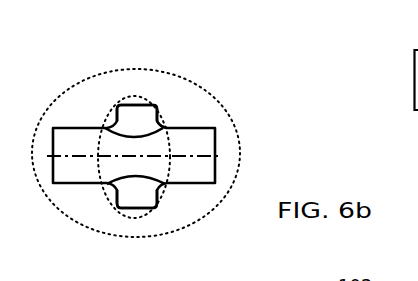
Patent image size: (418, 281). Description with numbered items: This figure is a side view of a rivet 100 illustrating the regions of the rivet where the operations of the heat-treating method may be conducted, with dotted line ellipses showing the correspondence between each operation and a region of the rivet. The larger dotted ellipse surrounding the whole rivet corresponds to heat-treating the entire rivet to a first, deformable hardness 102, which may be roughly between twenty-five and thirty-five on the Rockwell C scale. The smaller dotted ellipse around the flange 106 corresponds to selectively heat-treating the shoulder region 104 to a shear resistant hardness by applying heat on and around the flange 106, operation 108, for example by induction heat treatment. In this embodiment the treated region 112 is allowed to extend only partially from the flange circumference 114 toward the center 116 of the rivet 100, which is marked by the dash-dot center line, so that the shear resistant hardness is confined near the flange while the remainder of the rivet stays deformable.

The rivet 100 is at (207, 147).
The heat-treating operation 102 is at (178, 74).
The shoulder region 104 is at (160, 121).
The flange 106 is at (113, 118).
The selective heat-treating operation 108 is at (172, 143).
The treated region 112 is at (148, 178).
The flange circumference 114 is at (134, 104).
The center 116 is at (217, 153).